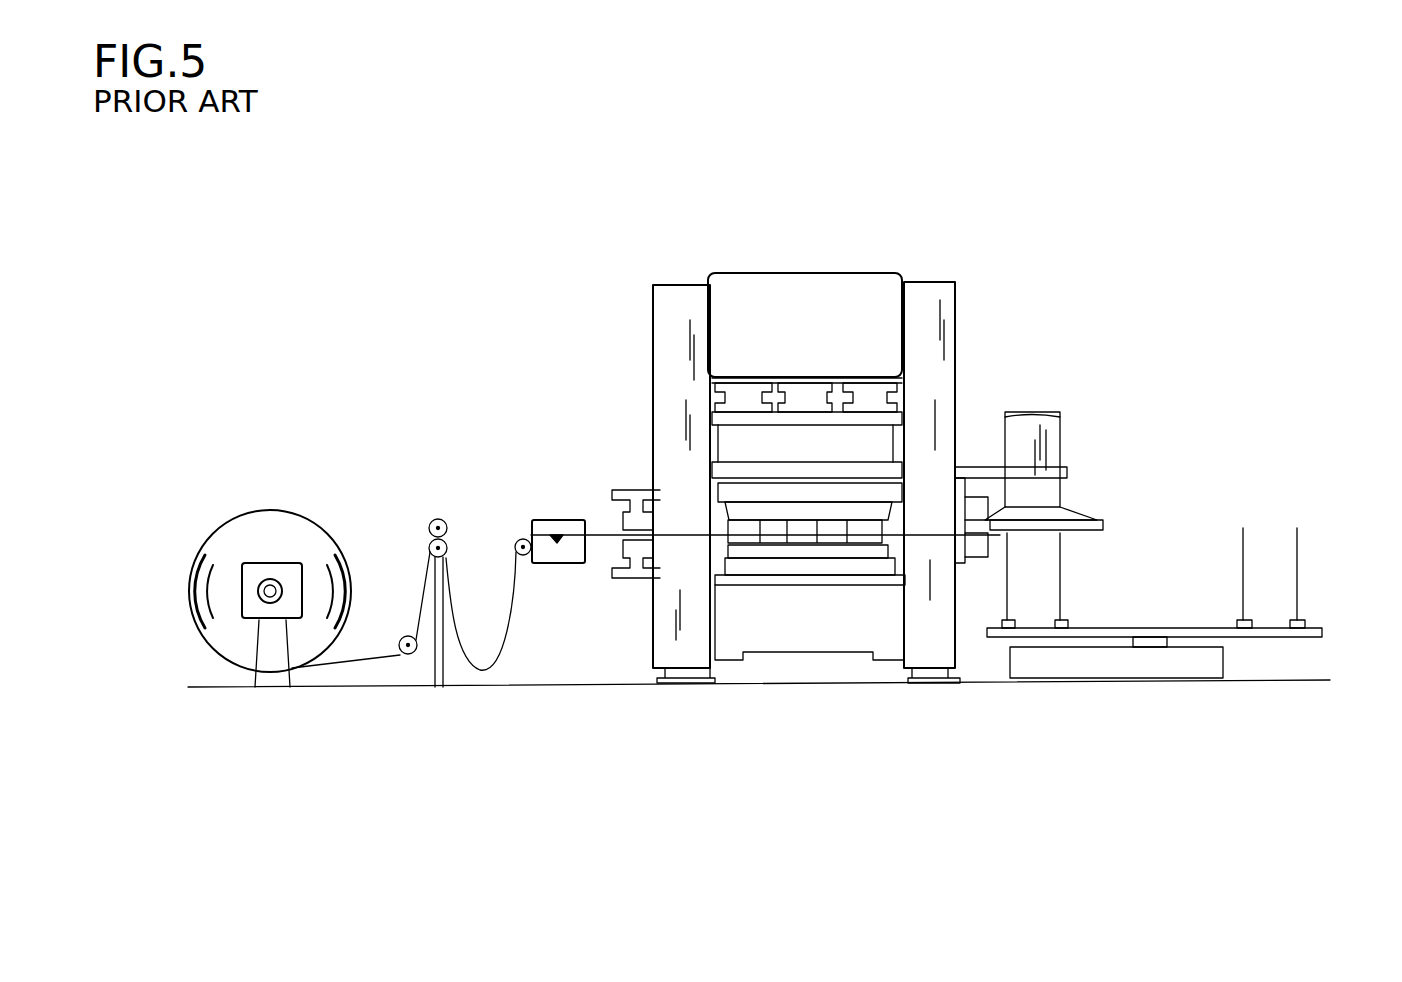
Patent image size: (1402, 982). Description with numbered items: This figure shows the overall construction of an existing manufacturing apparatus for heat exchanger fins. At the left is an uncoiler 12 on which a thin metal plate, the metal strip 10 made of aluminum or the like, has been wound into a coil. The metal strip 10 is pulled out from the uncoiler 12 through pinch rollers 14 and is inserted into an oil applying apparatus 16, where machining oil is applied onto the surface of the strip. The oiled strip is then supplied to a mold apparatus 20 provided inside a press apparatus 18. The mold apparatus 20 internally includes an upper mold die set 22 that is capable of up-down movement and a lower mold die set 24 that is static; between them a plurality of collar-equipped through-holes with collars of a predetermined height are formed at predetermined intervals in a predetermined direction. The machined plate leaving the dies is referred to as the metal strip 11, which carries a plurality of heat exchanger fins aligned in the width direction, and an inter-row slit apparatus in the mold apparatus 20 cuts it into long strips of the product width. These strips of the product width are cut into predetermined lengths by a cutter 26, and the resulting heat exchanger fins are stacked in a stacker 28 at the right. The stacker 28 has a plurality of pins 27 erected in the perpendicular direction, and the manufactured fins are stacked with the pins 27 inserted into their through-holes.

The metal strip 10 is at (366, 658).
The metal strip 11 is at (923, 530).
The uncoiler 12 is at (212, 520).
The pinch rollers 14 is at (436, 515).
The oil applying apparatus 16 is at (540, 520).
The press apparatus 18 is at (786, 236).
The mold apparatus 20 is at (848, 455).
The upper mold die set 22 is at (872, 516).
The lower mold die set 24 is at (865, 550).
The cutter 26 is at (1022, 508).
The pins 27 is at (1007, 568).
The stacker 28 is at (1183, 548).